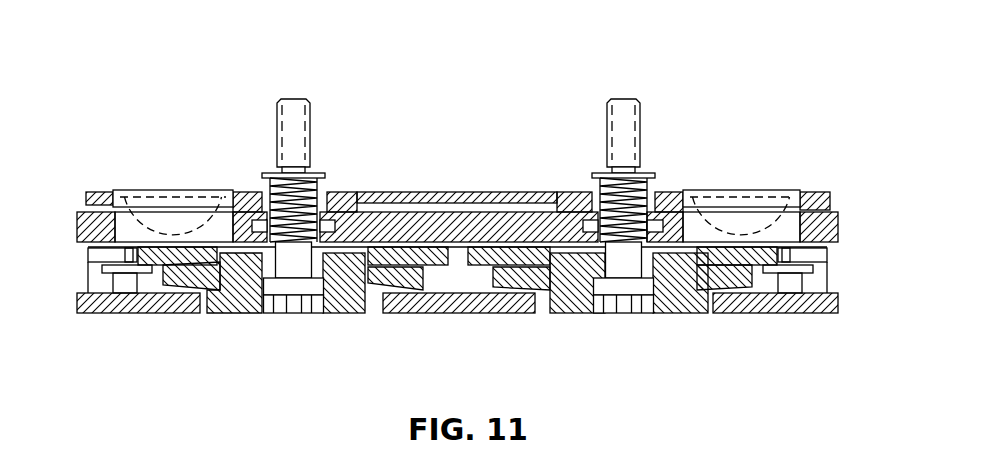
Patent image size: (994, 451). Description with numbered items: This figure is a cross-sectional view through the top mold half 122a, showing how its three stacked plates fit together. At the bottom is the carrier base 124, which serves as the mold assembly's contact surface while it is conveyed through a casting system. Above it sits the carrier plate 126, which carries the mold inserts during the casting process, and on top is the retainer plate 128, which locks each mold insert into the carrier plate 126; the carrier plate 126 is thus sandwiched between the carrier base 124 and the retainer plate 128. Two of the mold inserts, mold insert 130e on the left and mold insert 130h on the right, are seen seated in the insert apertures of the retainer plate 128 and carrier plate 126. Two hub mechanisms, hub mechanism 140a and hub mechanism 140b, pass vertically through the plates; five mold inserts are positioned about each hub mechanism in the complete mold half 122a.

The mold half 122a is at (190, 108).
The carrier base 124 is at (87, 315).
The carrier plate 126 is at (77, 225).
The retainer plate 128 is at (86, 195).
The mold insert 130e is at (122, 188).
The mold insert 130h is at (793, 190).
The hub mechanism 140a is at (240, 315).
The hub mechanism 140b is at (686, 313).